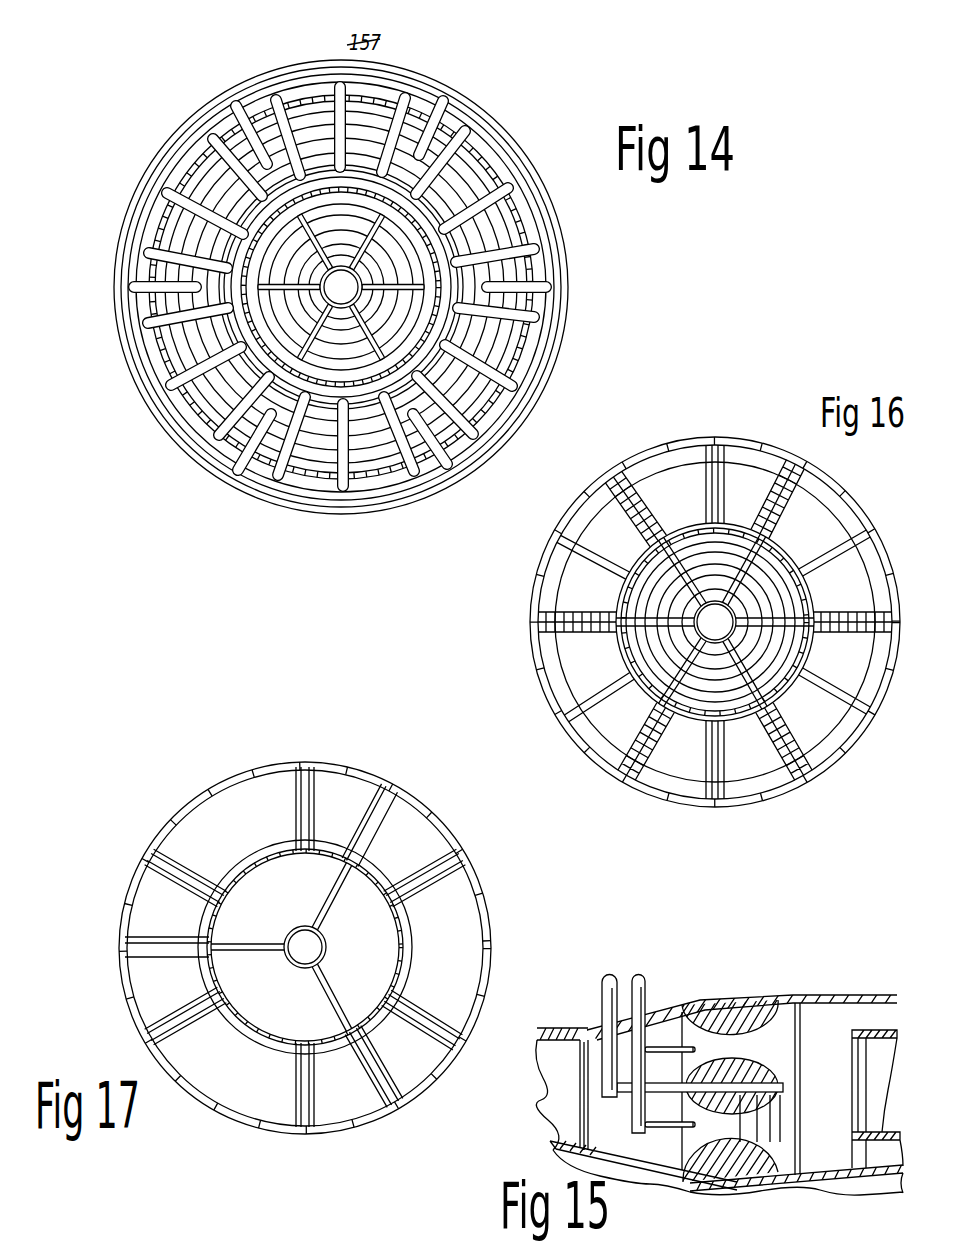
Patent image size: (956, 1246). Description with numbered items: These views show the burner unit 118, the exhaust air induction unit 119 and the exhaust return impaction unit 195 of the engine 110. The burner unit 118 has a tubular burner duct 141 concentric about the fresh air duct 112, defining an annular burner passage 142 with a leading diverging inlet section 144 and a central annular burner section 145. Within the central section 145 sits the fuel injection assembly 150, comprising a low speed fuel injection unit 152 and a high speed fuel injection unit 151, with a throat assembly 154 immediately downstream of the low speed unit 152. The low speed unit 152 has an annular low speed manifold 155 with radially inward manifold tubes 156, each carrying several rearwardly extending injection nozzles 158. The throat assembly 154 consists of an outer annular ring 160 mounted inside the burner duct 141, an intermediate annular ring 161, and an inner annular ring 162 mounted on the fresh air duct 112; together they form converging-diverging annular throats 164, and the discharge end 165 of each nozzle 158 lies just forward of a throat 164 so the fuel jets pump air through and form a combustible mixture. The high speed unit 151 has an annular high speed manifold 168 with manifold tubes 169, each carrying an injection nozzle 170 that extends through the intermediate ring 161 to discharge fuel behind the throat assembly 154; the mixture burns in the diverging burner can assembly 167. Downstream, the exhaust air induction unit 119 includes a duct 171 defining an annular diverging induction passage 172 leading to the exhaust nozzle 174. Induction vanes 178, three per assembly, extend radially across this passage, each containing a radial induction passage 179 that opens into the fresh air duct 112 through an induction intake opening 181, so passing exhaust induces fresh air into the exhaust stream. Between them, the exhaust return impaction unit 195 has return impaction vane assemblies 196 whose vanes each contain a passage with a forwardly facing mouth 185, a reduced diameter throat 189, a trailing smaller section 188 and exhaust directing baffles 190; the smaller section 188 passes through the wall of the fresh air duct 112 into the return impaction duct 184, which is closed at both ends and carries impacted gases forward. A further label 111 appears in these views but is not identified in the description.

In FIG. 14, the engine 110 is at (494, 92).
In FIG. 16, the engine 110 is at (525, 595).
In FIG. 14, the outer rim 111 is at (150, 301).
In FIG. 16, the outer rim 111 is at (774, 447).
In FIG. 17, the fresh air duct 112 is at (386, 961).
In FIG. 15, the fresh air duct 112 is at (683, 1178).
In FIG. 14, the burner unit 118 is at (470, 150).
In FIG. 16, the exhaust air induction unit 119 is at (722, 455).
In FIG. 17, the exhaust air induction unit 119 is at (447, 875).
In FIG. 14, the tubular burner duct 141 is at (295, 470).
In FIG. 15, the tubular burner duct 141 is at (773, 981).
In FIG. 14, the annular burner passage 142 is at (484, 183).
In FIG. 15, the leading annular diverging inlet section 144 is at (592, 1093).
In FIG. 15, the central annular burner section 145 is at (807, 1173).
In FIG. 14, the fuel injection assembly 150 is at (416, 64).
In FIG. 14, the high speed fuel injection unit 151 is at (243, 98).
In FIG. 15, the high speed fuel injection unit 151 is at (610, 965).
In FIG. 14, the low speed fuel injection unit 152 is at (338, 80).
In FIG. 15, the low speed fuel injection unit 152 is at (637, 976).
In FIG. 14, the throat assembly 154 is at (508, 208).
In FIG. 14, the annular low speed manifold 155 is at (540, 340).
In FIG. 14, the manifold tubes 156 is at (490, 252).
In FIG. 15, the manifold tubes 156 is at (643, 990).
In FIG. 15, the injection nozzles 158 is at (653, 1052).
In FIG. 14, the outer annular ring 160 is at (205, 345).
In FIG. 15, the outer annular ring 160 is at (737, 986).
In FIG. 14, the intermediate annular ring 161 is at (270, 400).
In FIG. 15, the intermediate annular ring 161 is at (750, 1064).
In FIG. 14, the inner annular ring 162 is at (255, 375).
In FIG. 15, the inner annular ring 162 is at (731, 1160).
In FIG. 14, the converging-diverging annular throats 164 is at (500, 232).
In FIG. 15, the converging-diverging annular throats 164 is at (742, 1022).
In FIG. 15, the discharge end 165 is at (695, 1049).
In FIG. 15, the burner can assembly 167 is at (875, 1028).
In FIG. 14, the annular high speed manifold 168 is at (548, 362).
In FIG. 14, the manifold tubes 169 is at (548, 288).
In FIG. 15, the manifold tubes 169 is at (604, 1001).
In FIG. 15, the injection nozzle 170 is at (700, 1098).
In FIG. 16, the duct 171 is at (656, 797).
In FIG. 17, the duct 171 is at (445, 831).
In FIG. 16, the annular diverging induction passage 172 is at (617, 730).
In FIG. 17, the annular diverging induction passage 172 is at (475, 945).
In FIG. 16, the exhaust nozzle 174 is at (560, 670).
In FIG. 16, the induction vanes 178 is at (722, 488).
In FIG. 17, the induction vanes 178 is at (296, 808).
In FIG. 17, the induction passage 179 is at (300, 826).
In FIG. 17, the induction intake opening 181 is at (228, 900).
In FIG. 14, the return impaction duct 184 is at (341, 287).
In FIG. 16, the return impaction duct 184 is at (737, 616).
In FIG. 17, the return impaction duct 184 is at (327, 946).
In FIG. 16, the open mouth 185 is at (858, 607).
In FIG. 16, the trailing smaller section 188 is at (640, 636).
In FIG. 17, the trailing smaller section 188 is at (330, 905).
In FIG. 16, the reduced diameter throat 189 is at (650, 752).
In FIG. 16, the exhaust directing baffles 190 is at (778, 758).
In FIG. 16, the exhaust return impaction unit 195 is at (641, 460).
In FIG. 17, the exhaust return impaction unit 195 is at (405, 809).
In FIG. 16, the return impaction vane assemblies 196 is at (648, 497).
In FIG. 17, the return impaction vane assemblies 196 is at (375, 806).